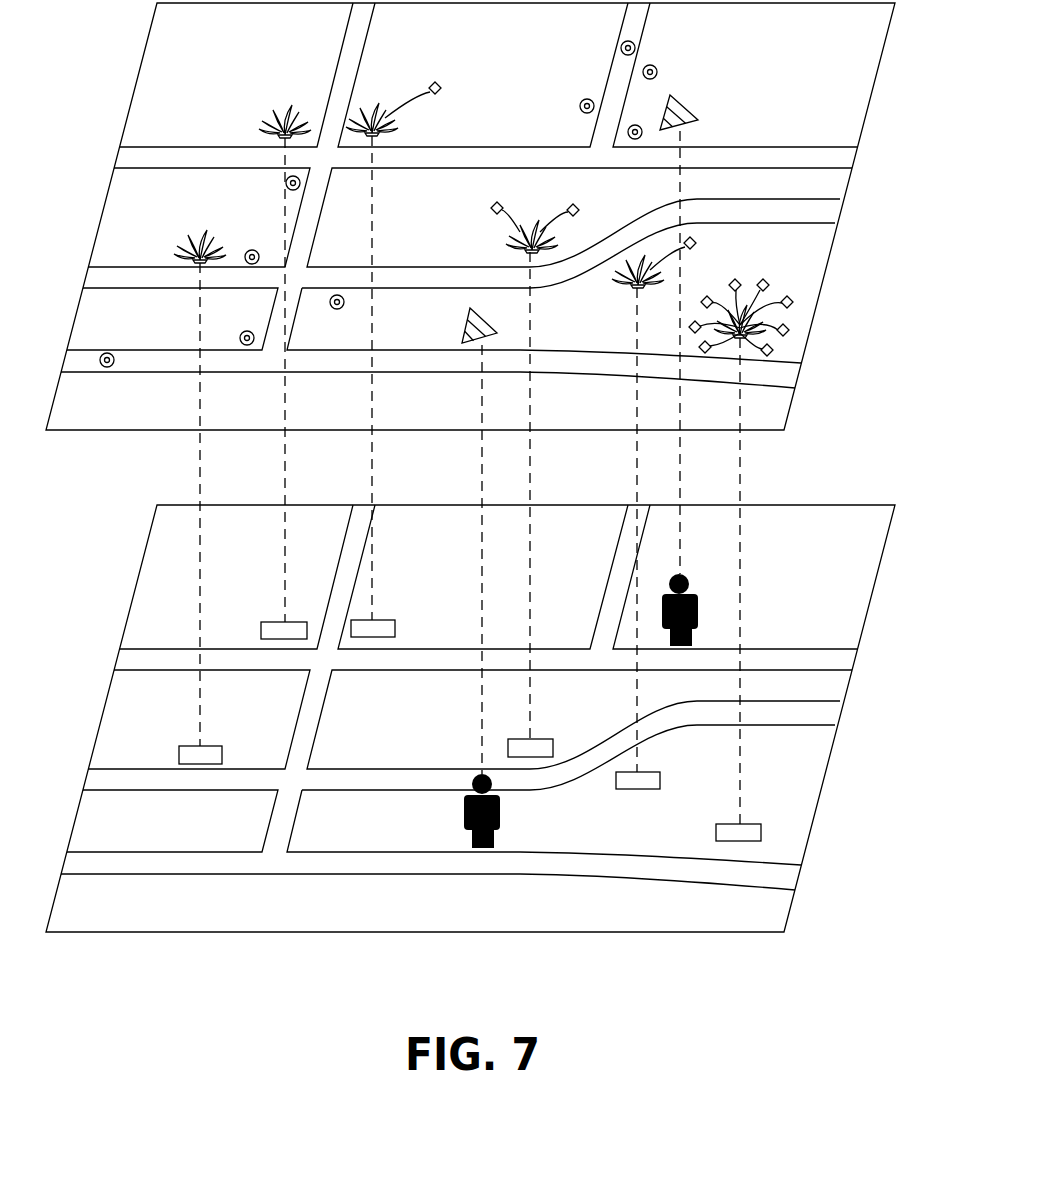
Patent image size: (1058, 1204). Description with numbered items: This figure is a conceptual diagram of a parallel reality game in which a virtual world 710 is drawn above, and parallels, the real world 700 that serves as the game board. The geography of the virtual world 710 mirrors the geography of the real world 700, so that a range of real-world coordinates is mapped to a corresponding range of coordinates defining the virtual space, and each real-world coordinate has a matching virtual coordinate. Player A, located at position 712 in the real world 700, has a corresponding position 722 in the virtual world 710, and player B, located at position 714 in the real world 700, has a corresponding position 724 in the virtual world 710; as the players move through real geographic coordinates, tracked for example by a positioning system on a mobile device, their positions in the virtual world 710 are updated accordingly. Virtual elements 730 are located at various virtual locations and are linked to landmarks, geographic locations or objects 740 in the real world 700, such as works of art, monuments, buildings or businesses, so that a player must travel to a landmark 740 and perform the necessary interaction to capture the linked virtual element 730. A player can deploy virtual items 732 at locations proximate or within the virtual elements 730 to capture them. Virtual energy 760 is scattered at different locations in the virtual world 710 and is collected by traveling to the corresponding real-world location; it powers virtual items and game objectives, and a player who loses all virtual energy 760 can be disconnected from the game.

The real world 700 is at (872, 592).
The virtual world 710 is at (863, 125).
The position of player A 712 is at (464, 817).
The position of player B 714 is at (697, 598).
The corresponding position of player A 722 is at (497, 333).
The corresponding position of player B 724 is at (700, 118).
The virtual elements 730 is at (288, 110).
The virtual items 732 is at (445, 85).
The real-world landmarks or objects 740 is at (277, 622).
The virtual energy 760 is at (103, 357).